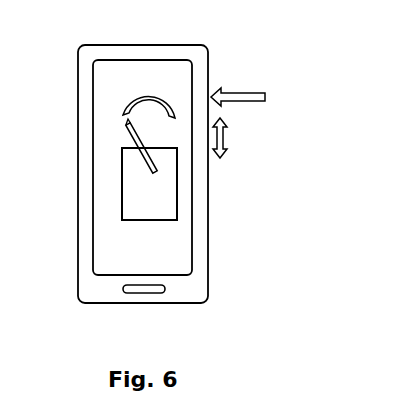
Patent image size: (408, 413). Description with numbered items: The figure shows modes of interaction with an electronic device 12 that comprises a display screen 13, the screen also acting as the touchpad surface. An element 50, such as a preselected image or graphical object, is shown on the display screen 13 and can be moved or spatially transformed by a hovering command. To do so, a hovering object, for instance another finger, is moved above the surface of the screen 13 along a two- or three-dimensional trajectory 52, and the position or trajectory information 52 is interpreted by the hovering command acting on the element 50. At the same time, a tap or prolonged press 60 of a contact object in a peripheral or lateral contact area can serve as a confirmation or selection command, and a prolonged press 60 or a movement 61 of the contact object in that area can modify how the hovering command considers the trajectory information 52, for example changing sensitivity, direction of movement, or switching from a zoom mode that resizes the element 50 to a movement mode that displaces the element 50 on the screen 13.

The device 12 is at (143, 45).
The display screen 13 is at (92, 67).
The element 50 is at (122, 184).
The trajectory 52 is at (123, 104).
The prolonged press 60 is at (267, 97).
The movement 61 is at (227, 147).